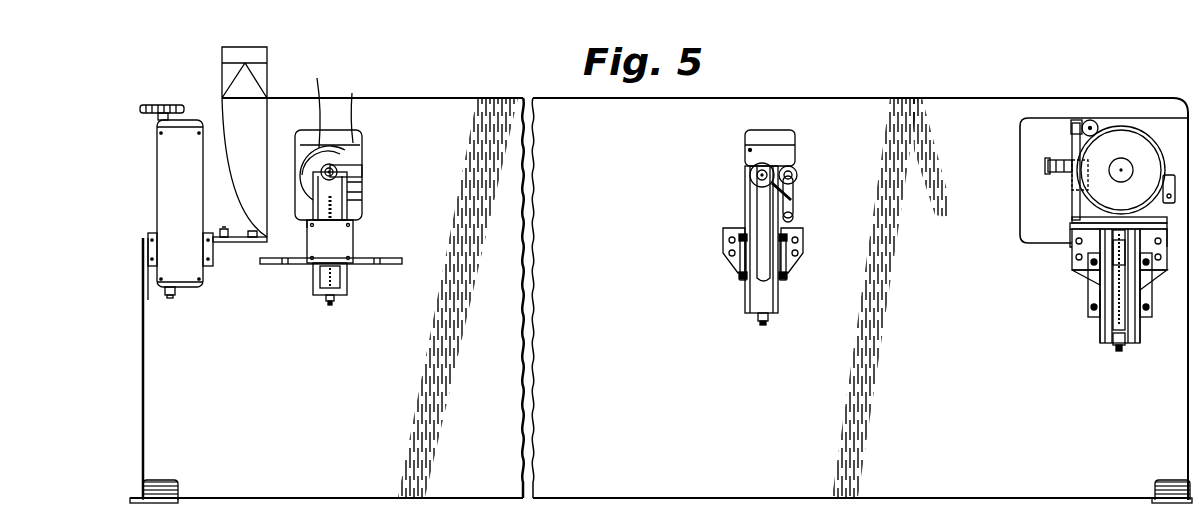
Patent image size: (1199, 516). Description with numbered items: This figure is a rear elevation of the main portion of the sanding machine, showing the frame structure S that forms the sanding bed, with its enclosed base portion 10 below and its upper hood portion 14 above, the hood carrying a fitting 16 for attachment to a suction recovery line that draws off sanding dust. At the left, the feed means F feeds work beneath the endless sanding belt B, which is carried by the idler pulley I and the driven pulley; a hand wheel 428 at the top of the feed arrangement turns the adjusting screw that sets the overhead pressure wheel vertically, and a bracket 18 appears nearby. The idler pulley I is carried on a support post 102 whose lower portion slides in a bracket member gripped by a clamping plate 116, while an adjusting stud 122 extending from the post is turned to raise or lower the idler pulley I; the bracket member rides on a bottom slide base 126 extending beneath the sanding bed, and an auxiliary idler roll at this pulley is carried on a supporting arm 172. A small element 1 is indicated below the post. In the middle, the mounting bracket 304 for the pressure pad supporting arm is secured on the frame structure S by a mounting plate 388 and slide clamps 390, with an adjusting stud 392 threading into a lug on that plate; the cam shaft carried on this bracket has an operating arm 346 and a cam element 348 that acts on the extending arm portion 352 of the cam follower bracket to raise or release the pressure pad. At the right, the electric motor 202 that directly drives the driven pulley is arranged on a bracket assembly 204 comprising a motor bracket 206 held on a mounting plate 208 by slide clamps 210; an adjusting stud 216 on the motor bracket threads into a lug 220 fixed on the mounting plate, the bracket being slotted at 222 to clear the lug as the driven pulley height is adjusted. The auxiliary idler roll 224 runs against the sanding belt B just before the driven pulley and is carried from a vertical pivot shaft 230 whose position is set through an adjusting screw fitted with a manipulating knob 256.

The hand wheel 428 is at (160, 107).
The fitting 16 is at (222, 76).
The feed means F is at (157, 146).
The idler pulley I is at (313, 108).
The endless sanding belt B is at (347, 113).
The supporting arm 172 is at (367, 176).
The enclosed base portion 10 is at (349, 212).
The bracket 18 is at (238, 235).
The adjusting stud 122 is at (306, 226).
The clamping plate 116 is at (353, 243).
The bottom slide base 126 is at (298, 266).
The support post 102 is at (349, 282).
The tip 1 is at (334, 302).
The frame structure S is at (142, 360).
The upper hood portion 14 is at (902, 97).
The mounting bracket 304 is at (763, 205).
The cam element 348 is at (797, 172).
The extending arm portion 352 is at (793, 192).
The operating arm 346 is at (793, 211).
The mounting plate 388 is at (723, 243).
The slide clamps 390 is at (740, 265).
The adjusting stud 392 is at (761, 324).
The auxiliary idler roll 224 is at (1092, 118).
The electric motor 202 is at (1138, 145).
The vertical pivot shaft 230 is at (1072, 143).
The manipulating knob 256 is at (1050, 172).
The mounting plate 208 is at (1078, 282).
The slide clamps 210 is at (1090, 300).
The lug 220 is at (1118, 263).
The slot 222 is at (1120, 293).
The motor bracket 206 is at (1098, 339).
The adjusting stud 216 is at (1112, 348).
The bracket assembly 204 is at (1143, 348).